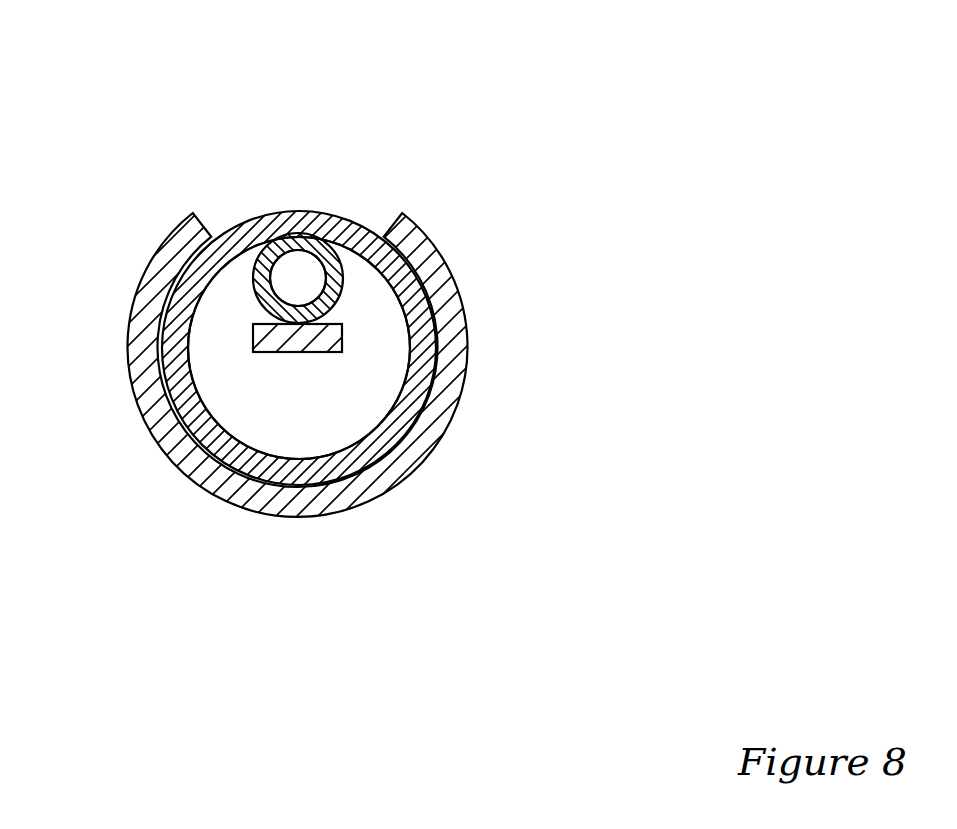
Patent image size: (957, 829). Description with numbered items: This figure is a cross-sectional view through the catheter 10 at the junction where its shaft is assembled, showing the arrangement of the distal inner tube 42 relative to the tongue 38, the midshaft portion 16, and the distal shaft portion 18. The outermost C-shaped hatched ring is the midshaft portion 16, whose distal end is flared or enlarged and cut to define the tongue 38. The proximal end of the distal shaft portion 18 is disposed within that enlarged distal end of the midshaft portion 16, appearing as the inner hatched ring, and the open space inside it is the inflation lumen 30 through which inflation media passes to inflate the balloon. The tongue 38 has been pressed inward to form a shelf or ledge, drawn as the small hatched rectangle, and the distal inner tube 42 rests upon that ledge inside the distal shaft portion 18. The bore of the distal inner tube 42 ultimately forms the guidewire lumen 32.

The catheter 10 is at (152, 110).
The midshaft portion 16 is at (428, 440).
The distal shaft portion 18 is at (360, 237).
The inflation lumen 30 is at (245, 403).
The guidewire lumen 32 is at (293, 277).
The tongue 38 is at (265, 338).
The distal inner tube 42 is at (270, 243).